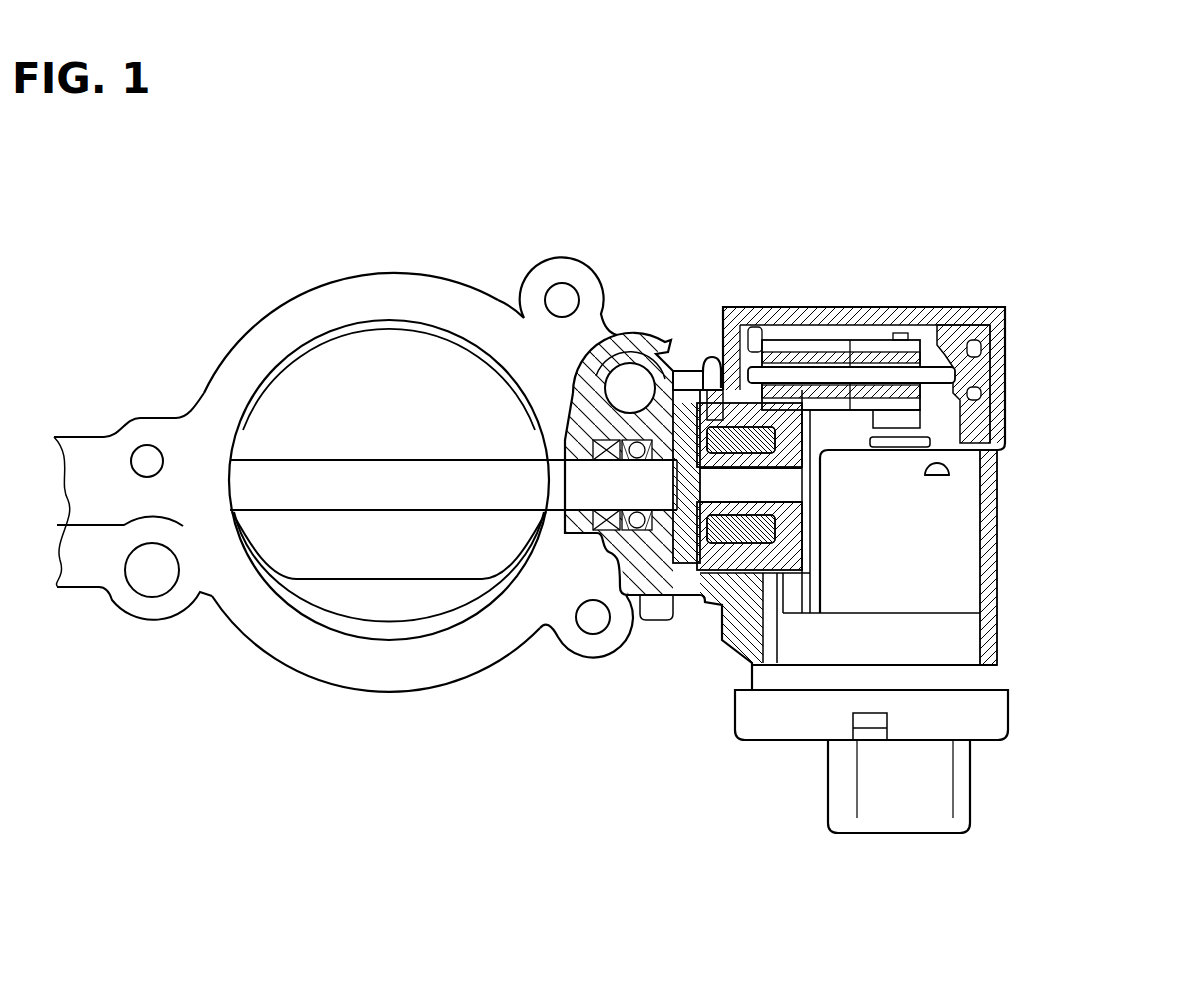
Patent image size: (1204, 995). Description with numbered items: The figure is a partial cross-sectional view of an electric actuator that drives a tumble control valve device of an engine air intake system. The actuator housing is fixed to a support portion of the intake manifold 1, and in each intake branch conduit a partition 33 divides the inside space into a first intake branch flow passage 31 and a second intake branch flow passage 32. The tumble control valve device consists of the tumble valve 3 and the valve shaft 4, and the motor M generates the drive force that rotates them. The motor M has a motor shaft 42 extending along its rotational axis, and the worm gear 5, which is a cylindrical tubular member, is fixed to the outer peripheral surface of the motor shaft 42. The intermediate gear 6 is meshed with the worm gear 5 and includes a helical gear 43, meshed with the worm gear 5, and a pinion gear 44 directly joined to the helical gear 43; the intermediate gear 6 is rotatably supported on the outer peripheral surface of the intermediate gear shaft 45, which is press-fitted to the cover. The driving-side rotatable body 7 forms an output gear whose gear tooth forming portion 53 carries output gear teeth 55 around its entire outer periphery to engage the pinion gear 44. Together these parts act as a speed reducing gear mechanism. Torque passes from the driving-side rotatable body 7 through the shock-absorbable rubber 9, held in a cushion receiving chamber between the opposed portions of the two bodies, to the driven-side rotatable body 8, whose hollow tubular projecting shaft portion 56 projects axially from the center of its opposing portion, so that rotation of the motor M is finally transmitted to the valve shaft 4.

The intake manifold 1 is at (268, 307).
The tumble valve 3 is at (368, 357).
The first intake branch flow passage 31 is at (288, 364).
The second intake branch flow passage 32 is at (465, 568).
The partition 33 is at (340, 512).
The valve shaft 4 is at (575, 462).
The worm gear 5 is at (925, 410).
The intermediate gear 6 is at (920, 135).
The driving-side rotatable body 7 is at (795, 428).
The driven-side rotatable body 8 is at (687, 548).
The shock-absorbable rubber 9 is at (745, 545).
The motor shaft 42 is at (913, 318).
The helical gear 43 is at (865, 342).
The pinion gear 44 is at (812, 342).
The intermediate gear shaft 45 is at (943, 375).
The gear tooth forming portion 53 is at (708, 400).
The output gear teeth 55 is at (737, 393).
The projecting shaft portion 56 is at (803, 505).
The electric motor M is at (967, 490).